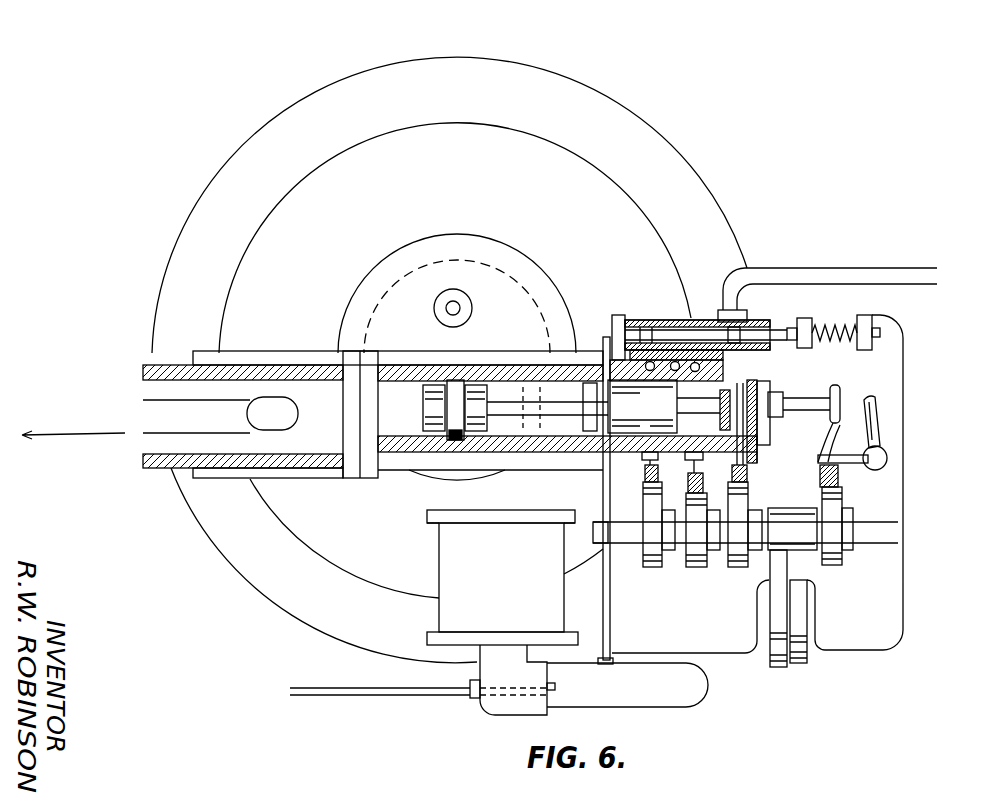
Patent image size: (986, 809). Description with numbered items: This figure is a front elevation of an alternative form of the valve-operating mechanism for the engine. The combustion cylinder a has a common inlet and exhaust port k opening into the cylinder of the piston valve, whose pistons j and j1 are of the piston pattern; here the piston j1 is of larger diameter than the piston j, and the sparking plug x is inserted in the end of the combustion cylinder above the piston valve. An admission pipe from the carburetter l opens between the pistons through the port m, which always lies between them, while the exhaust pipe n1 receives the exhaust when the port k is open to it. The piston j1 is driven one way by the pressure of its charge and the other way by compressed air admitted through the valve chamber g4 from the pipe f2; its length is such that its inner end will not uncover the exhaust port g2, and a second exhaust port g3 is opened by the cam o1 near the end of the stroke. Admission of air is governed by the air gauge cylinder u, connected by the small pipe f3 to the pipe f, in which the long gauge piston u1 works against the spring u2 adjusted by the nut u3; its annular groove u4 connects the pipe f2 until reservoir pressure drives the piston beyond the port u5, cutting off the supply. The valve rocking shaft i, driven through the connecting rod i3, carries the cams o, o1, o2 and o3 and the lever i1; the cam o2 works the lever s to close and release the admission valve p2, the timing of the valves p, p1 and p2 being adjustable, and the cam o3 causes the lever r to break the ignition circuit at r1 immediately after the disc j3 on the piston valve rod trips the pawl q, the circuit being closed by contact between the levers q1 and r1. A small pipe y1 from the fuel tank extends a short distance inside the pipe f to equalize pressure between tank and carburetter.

The combustion cylinder a is at (457, 357).
The sparking plug x is at (460, 308).
The air pipe to motor n is at (176, 416).
The exhaust pipe n1 is at (475, 414).
The piston of piston valve j is at (515, 407).
The common inlet and exhaust port k is at (448, 437).
The piston of piston valve j1 is at (669, 406).
The admission valve p2 is at (748, 468).
The second exhaust port g3 is at (770, 365).
The small pipe f3 is at (617, 500).
The air gauge cylinder u is at (627, 340).
The gauge piston u1 is at (690, 335).
The exhaust port g2 is at (645, 325).
The annular groove u4 is at (723, 318).
The port u5 is at (733, 342).
The pipe f2 is at (847, 273).
The valve chamber g4 is at (770, 330).
The nut u3 is at (810, 328).
The spring u2 is at (872, 316).
The disc j3 is at (837, 400).
The pawl q is at (823, 445).
The lever q1 is at (873, 403).
The lever r1 is at (880, 403).
The lever r is at (888, 458).
The valve rocking shaft i is at (745, 529).
The valve p is at (648, 467).
The valve p1 is at (684, 472).
The lever s is at (732, 473).
The cam o is at (652, 567).
The cam o1 is at (698, 567).
The cam o2 is at (738, 567).
The lever i1 is at (792, 529).
The cam o3 is at (835, 565).
The connecting rod i3 is at (797, 615).
The carburetter l is at (502, 577).
The port m is at (501, 499).
The pipe f is at (594, 680).
The small pipe y1 is at (417, 690).